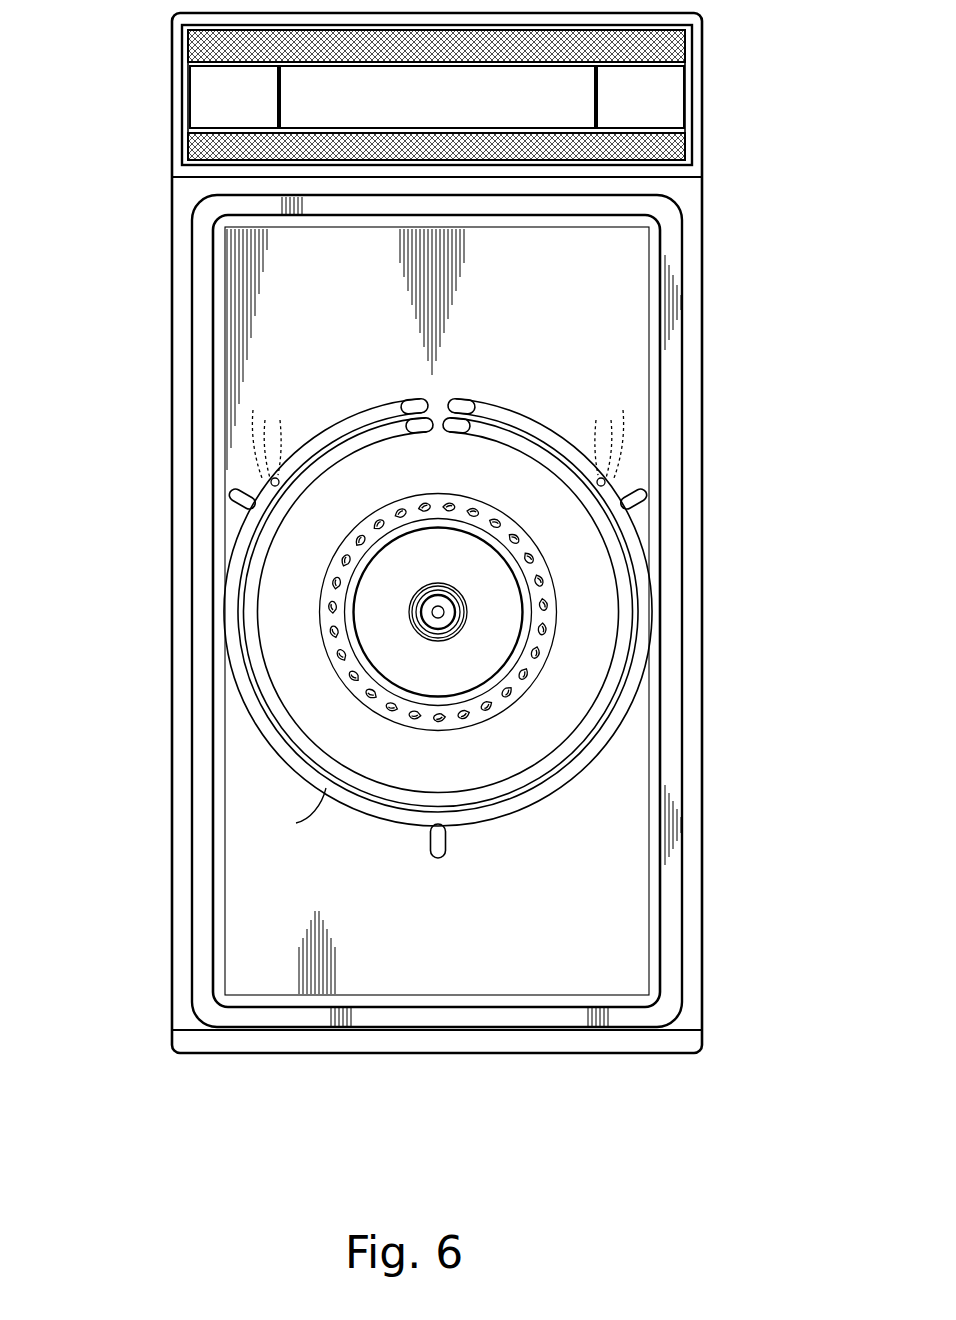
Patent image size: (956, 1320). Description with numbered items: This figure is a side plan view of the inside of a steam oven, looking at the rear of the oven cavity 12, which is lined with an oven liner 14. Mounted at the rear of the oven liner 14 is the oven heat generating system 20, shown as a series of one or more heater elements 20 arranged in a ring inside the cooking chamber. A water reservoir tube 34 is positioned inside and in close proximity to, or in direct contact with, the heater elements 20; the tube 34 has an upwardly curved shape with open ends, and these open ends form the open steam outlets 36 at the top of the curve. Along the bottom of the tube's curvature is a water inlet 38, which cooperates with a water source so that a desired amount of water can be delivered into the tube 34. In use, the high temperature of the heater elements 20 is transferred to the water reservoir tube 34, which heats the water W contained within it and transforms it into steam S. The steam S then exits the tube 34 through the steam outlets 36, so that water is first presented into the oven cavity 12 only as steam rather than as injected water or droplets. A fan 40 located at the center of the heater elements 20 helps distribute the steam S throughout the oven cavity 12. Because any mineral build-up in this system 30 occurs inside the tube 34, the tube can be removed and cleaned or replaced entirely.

The oven cavity 12 is at (355, 319).
The oven liner 14 is at (471, 912).
The oven heat generating system 20 is at (502, 545).
The system 30 is at (442, 576).
The water reservoir tube 34 is at (652, 611).
The steam outlets 36 is at (278, 484).
The water inlet 38 is at (448, 841).
The fan 40 is at (524, 690).
The steam S is at (282, 400).
The water W is at (292, 841).